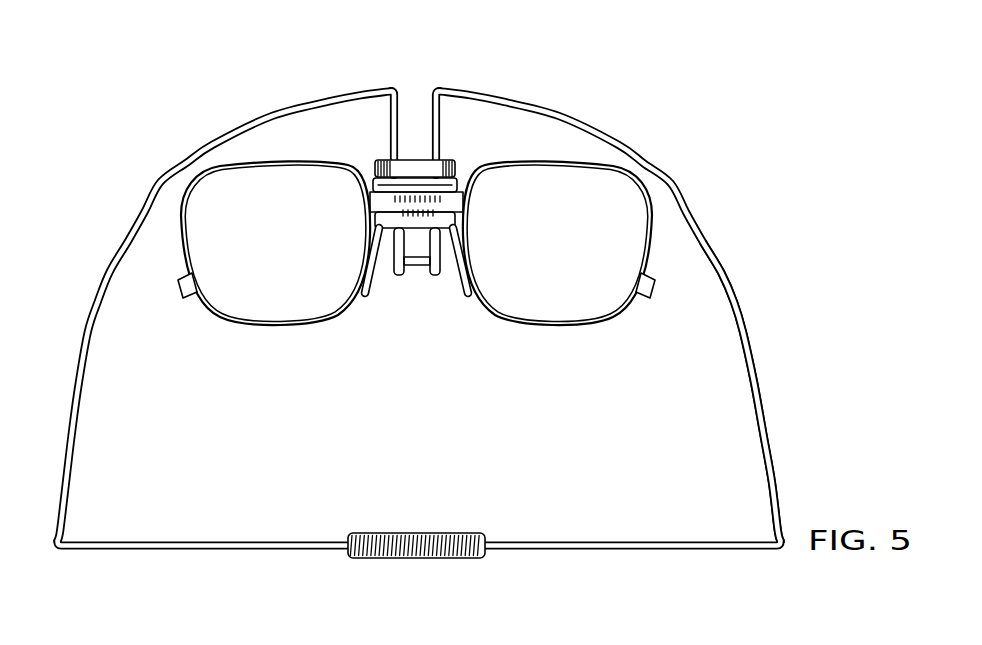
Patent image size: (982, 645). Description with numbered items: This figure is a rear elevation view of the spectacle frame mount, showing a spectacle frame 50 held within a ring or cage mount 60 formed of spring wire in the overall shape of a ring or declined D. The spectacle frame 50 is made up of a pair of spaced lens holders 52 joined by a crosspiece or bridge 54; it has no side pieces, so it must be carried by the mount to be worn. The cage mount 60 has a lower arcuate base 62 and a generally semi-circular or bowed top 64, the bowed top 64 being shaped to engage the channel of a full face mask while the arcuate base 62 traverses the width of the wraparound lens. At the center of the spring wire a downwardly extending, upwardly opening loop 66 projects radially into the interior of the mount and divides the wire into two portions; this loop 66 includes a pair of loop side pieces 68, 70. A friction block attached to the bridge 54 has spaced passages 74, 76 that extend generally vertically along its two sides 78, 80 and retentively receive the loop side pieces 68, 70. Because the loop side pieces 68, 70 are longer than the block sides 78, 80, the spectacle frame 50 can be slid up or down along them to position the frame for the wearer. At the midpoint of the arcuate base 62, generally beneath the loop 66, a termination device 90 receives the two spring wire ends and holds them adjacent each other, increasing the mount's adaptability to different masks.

The spectacle frame 50 is at (393, 316).
The lens holders 52 is at (243, 325).
The bridge 54 is at (405, 243).
The ring or cage mount 60 is at (664, 95).
The arcuate base 62 is at (256, 550).
The bowed top 64 is at (735, 250).
The loop 66 is at (418, 90).
The loop side piece 68 is at (440, 131).
The loop side piece 70 is at (390, 128).
The passage 74 is at (460, 176).
The passage 76 is at (373, 178).
The side of friction block 78 is at (458, 221).
The side of friction block 80 is at (373, 221).
The termination device 90 is at (460, 516).